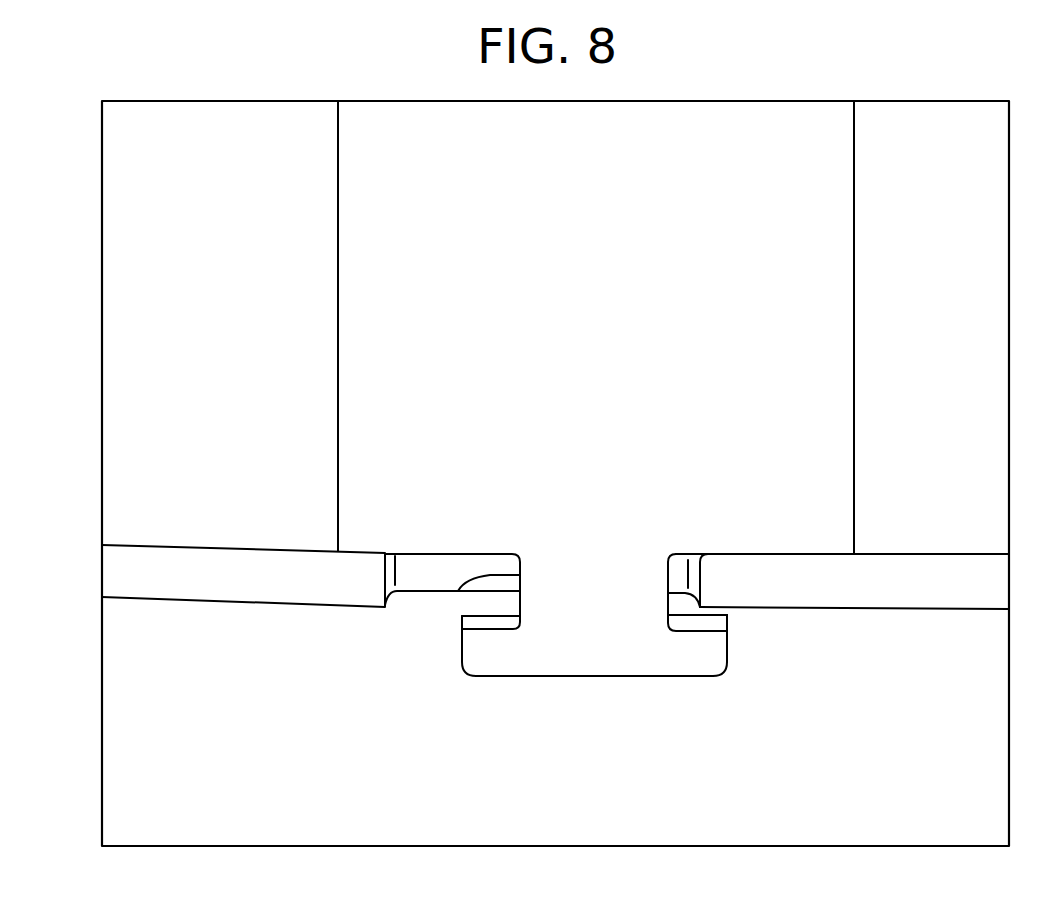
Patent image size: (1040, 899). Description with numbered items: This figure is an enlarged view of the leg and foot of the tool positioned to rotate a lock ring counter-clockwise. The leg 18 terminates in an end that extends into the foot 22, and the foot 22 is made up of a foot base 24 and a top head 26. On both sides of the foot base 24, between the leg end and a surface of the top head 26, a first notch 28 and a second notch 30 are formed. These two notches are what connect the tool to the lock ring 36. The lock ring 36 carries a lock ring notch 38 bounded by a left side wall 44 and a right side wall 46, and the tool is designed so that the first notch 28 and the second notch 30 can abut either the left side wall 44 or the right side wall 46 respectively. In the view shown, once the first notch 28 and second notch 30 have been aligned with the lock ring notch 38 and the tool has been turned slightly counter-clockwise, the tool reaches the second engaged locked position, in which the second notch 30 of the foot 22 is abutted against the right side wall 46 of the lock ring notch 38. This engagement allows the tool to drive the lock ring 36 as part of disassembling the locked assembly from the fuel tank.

The leg 18 is at (367, 247).
The lock ring 36 is at (125, 558).
The lock ring notch 38 is at (430, 572).
The left side wall 44 is at (383, 580).
The first notch 28 is at (487, 575).
The foot 22 is at (599, 658).
The top head 26 is at (640, 650).
The foot base 24 is at (637, 598).
The second notch 30 is at (668, 578).
The right side wall 46 is at (700, 565).